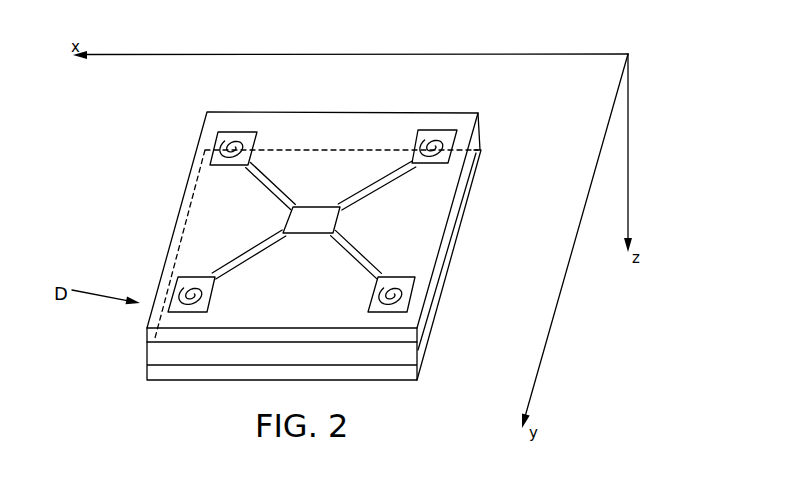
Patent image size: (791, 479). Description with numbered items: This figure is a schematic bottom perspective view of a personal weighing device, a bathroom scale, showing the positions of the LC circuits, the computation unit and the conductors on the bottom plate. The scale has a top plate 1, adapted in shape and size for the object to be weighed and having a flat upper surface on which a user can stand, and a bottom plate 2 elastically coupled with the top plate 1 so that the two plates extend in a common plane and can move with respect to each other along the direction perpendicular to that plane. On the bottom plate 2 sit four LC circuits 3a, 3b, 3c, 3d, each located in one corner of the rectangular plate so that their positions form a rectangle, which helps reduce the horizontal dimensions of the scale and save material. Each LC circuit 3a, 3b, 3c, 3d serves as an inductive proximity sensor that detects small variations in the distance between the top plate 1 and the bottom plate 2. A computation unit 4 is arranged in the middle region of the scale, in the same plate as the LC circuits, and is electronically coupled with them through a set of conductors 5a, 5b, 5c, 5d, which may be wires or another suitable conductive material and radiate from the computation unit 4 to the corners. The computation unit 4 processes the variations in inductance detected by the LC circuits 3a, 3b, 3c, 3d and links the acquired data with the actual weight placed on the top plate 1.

The top plate 1 is at (467, 204).
The bottom plate 2 is at (454, 225).
The LC circuit 3a is at (455, 136).
The LC circuit 3b is at (218, 147).
The LC circuit 3c is at (178, 292).
The LC circuit 3d is at (408, 305).
The computation unit 4 is at (317, 218).
The conductor 5a is at (393, 170).
The conductor 5b is at (272, 191).
The conductor 5c is at (232, 265).
The conductor 5d is at (380, 263).